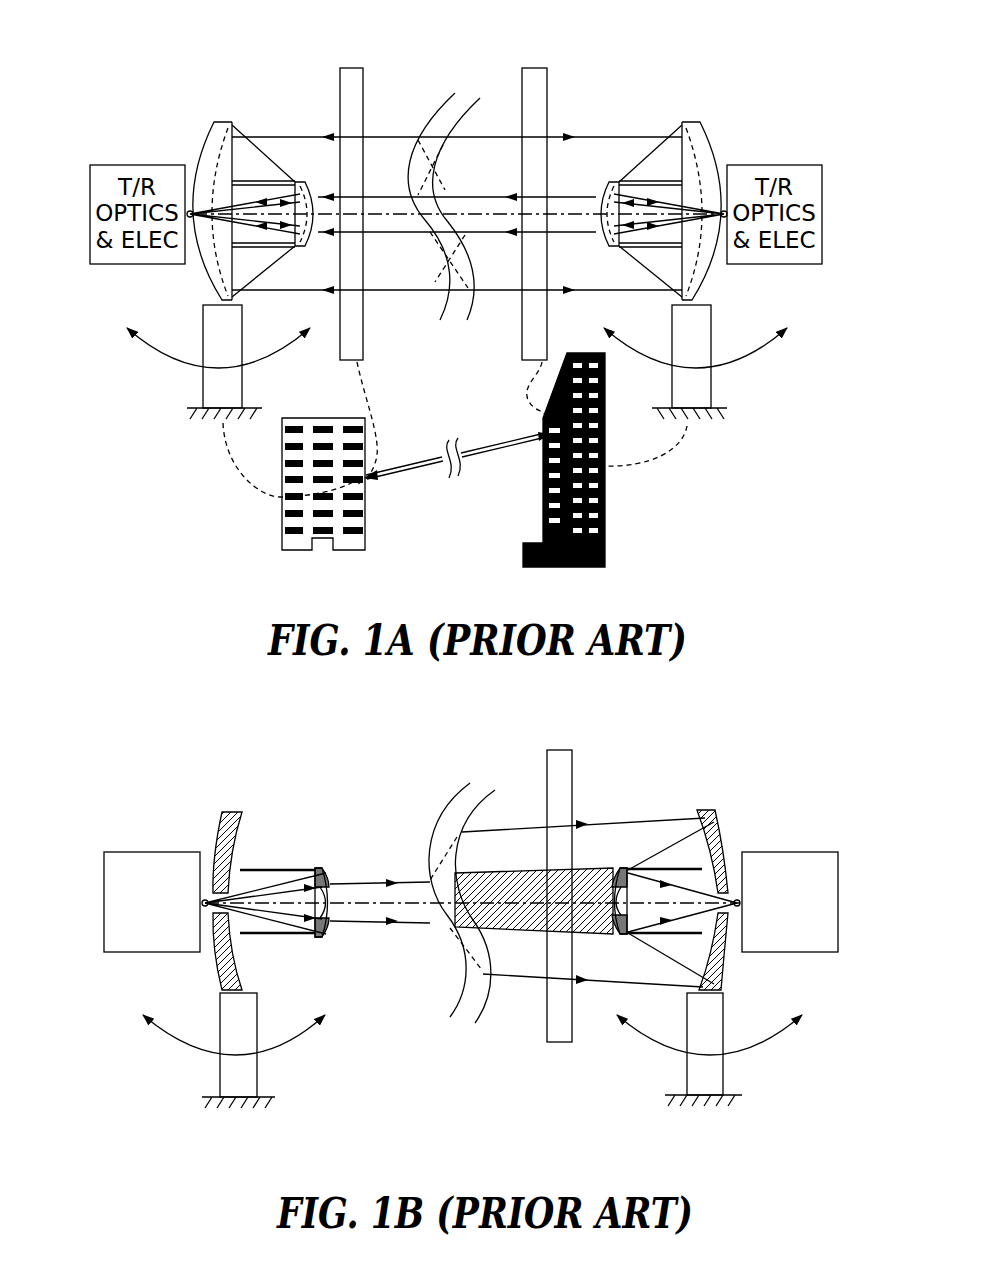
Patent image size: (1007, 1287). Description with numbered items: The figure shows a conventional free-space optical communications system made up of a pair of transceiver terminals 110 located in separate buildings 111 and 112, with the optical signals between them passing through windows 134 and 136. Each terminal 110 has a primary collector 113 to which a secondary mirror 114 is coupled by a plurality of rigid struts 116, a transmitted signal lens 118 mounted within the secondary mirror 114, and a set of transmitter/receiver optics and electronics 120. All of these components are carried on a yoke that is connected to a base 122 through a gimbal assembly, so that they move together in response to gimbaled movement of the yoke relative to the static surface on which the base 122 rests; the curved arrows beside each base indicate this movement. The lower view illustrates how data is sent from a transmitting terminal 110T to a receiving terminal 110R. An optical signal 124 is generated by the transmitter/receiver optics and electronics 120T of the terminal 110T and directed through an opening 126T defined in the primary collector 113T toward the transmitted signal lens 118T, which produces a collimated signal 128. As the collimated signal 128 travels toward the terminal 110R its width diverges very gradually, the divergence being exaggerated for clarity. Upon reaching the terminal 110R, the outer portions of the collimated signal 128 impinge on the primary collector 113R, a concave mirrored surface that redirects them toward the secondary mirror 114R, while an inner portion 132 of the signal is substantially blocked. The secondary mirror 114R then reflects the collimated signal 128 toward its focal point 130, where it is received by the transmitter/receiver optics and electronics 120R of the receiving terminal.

In FIG. 1A, the terminal 110 is at (157, 373).
In FIG. 1A, the building 111 is at (344, 546).
In FIG. 1A, the building 112 is at (700, 142).
In FIG. 1A, the primary collector 113 is at (223, 126).
In FIG. 1A, the secondary mirror 114 is at (312, 178).
In FIG. 1A, the rigid struts 116 is at (251, 178).
In FIG. 1A, the transmitted signal lens 118 is at (278, 300).
In FIG. 1A, the transmitter/receiver optics and electronics 120 is at (91, 214).
In FIG. 1A, the base 122 is at (218, 384).
In FIG. 1A, the window 134 is at (361, 361).
In FIG. 1A, the window 136 is at (528, 363).
In FIG. 1B, the window 136 is at (557, 1043).
In FIG. 1B, the terminal (transmitter) 110T is at (322, 1089).
In FIG. 1B, the terminal (receiver) 110R is at (617, 1103).
In FIG. 1B, the primary collector (transmitter) 113T is at (238, 812).
In FIG. 1B, the primary collector (receiver) 113R is at (713, 828).
In FIG. 1B, the secondary mirror (receiver) 114R is at (615, 872).
In FIG. 1B, the transmitted signal lens (transmitter) 118T is at (340, 905).
In FIG. 1B, the transmitter/receiver optics and electronics (transmitter) 120T is at (107, 903).
In FIG. 1B, the transmitter/receiver optics and electronics (receiver) 120R is at (838, 903).
In FIG. 1B, the optical signal 124 is at (270, 910).
In FIG. 1B, the opening 126T is at (253, 870).
In FIG. 1B, the collimated signal 128 is at (373, 922).
In FIG. 1B, the focal point 130 is at (738, 910).
In FIG. 1B, the inner portion 132 is at (498, 878).